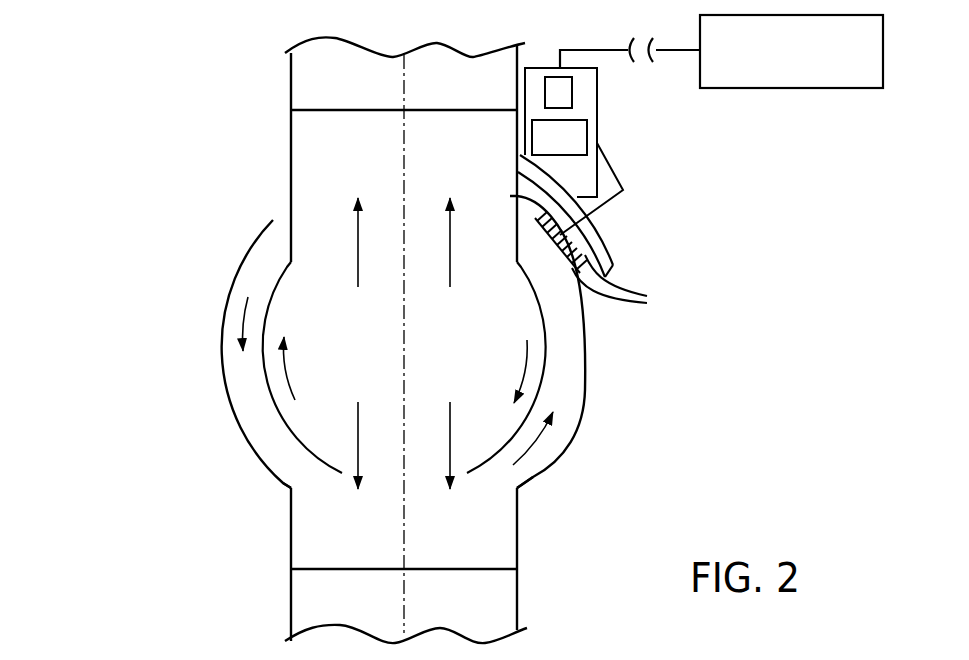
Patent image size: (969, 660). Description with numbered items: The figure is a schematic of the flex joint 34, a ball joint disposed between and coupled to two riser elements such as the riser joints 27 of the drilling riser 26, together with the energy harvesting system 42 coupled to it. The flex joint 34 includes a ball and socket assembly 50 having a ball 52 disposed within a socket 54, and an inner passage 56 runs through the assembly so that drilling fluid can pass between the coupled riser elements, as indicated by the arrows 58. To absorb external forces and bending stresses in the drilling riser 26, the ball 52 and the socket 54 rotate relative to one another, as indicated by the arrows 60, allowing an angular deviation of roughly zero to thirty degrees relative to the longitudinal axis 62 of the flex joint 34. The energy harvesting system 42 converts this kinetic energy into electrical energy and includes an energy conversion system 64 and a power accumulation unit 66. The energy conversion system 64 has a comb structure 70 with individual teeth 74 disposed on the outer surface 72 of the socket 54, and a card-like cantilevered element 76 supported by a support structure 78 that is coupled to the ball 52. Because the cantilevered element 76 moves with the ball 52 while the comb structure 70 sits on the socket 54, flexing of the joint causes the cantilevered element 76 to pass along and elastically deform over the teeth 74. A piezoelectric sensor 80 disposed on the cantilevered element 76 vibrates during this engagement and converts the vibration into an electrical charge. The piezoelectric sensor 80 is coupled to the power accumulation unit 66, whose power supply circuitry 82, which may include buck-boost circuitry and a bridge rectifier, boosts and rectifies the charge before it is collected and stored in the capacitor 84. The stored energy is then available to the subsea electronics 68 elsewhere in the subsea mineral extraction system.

The drilling riser 26 is at (110, 100).
The riser joints 27 is at (320, 82).
The flex joint 34 is at (151, 250).
The energy harvesting system 42 is at (712, 197).
The ball and socket assembly 50 is at (218, 372).
The ball 52 is at (542, 313).
The socket 54 is at (535, 473).
The inner passage 56 is at (391, 356).
The arrows 58 is at (357, 245).
The arrows 60 is at (242, 317).
The longitudinal axis 62 is at (405, 192).
The energy conversion system 64 is at (603, 315).
The power accumulation unit 66 is at (597, 117).
The subsea electronics 68 is at (787, 89).
The comb structure 70 is at (550, 262).
The outer surface 72 is at (578, 402).
The teeth 74 is at (627, 285).
The cantilevered element 76 is at (519, 196).
The support structure 78 is at (612, 262).
The piezoelectric sensor 80 is at (588, 240).
The power supply circuitry 82 is at (588, 137).
The capacitor 84 is at (572, 90).